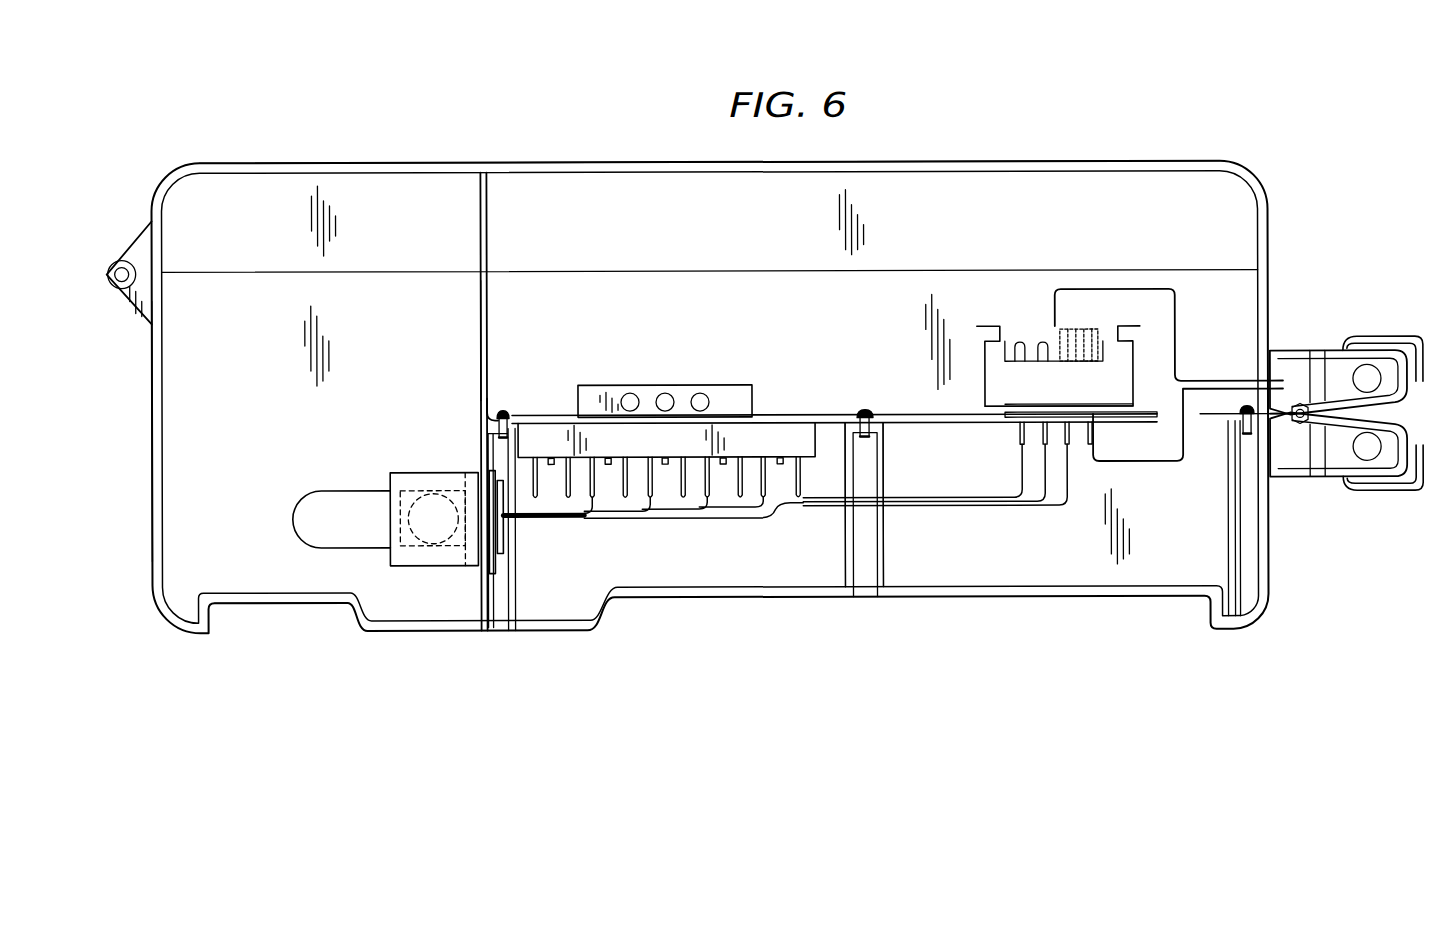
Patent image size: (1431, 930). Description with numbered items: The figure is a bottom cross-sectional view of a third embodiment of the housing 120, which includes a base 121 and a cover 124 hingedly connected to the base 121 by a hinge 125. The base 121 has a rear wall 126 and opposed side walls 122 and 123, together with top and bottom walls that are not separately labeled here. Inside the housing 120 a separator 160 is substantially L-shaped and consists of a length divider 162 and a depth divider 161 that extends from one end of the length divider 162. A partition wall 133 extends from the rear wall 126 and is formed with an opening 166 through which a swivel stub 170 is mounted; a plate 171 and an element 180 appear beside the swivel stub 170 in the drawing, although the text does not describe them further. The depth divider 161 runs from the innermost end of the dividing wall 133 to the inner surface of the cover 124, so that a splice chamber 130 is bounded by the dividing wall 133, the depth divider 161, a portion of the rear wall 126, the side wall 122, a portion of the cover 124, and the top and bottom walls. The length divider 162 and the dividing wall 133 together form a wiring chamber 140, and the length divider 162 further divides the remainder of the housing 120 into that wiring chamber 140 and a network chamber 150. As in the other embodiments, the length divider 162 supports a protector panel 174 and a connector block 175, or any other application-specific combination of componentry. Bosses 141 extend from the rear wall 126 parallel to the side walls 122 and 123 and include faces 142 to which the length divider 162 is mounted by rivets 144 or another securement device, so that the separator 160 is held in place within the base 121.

The housing 120 is at (840, 158).
The base 121 is at (700, 620).
The side wall 122 is at (150, 468).
The side wall 123 is at (1270, 522).
The cover 124 is at (610, 166).
The hinge 125 is at (130, 247).
The rear wall 126 is at (385, 636).
The splice chamber 130 is at (172, 378).
The partition wall 133 is at (487, 415).
The wiring chamber 140 is at (1050, 568).
The bosses 141 is at (516, 580).
The faces 142 is at (506, 430).
The rivets 144 is at (503, 410).
The network chamber 150 is at (1020, 186).
The separator 160 is at (490, 186).
The depth divider 161 is at (488, 328).
The length divider 162 is at (841, 421).
The opening 166 is at (490, 478).
The swivel stub 170 is at (405, 472).
The switch plate 171 is at (505, 553).
The protector panel 174 is at (690, 386).
The connector block 175 is at (985, 327).
The actuator 180 is at (320, 490).